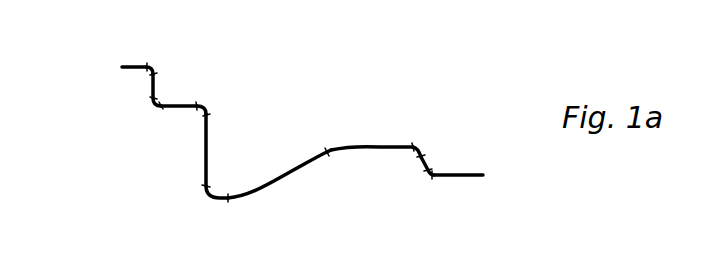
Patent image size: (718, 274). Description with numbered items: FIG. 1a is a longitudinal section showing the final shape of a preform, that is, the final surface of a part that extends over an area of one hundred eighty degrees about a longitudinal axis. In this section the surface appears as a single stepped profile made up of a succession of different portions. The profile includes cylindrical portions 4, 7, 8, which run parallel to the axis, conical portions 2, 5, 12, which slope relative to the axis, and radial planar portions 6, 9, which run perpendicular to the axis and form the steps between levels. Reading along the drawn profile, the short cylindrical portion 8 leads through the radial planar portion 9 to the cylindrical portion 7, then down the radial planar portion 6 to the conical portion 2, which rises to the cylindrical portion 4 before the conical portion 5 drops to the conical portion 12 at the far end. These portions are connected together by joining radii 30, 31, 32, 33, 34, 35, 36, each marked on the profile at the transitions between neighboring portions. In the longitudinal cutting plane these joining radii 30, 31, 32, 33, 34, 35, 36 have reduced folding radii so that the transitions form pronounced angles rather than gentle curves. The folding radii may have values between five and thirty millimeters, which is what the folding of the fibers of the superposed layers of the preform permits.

The conical portion 2 is at (278, 178).
The cylindrical portion 4 is at (362, 148).
The conical portion 5 is at (424, 166).
The radial planar portion 6 is at (205, 160).
The cylindrical portion 7 is at (178, 108).
The cylindrical portion 8 is at (123, 67).
The radial planar portion 9 is at (154, 98).
The conical portion 12 is at (456, 177).
The joining radius 30 is at (433, 169).
The joining radius 31 is at (421, 156).
The joining radius 32 is at (224, 197).
The joining radius 33 is at (328, 151).
The joining radius 34 is at (201, 106).
The joining radius 35 is at (162, 104).
The joining radius 36 is at (152, 68).